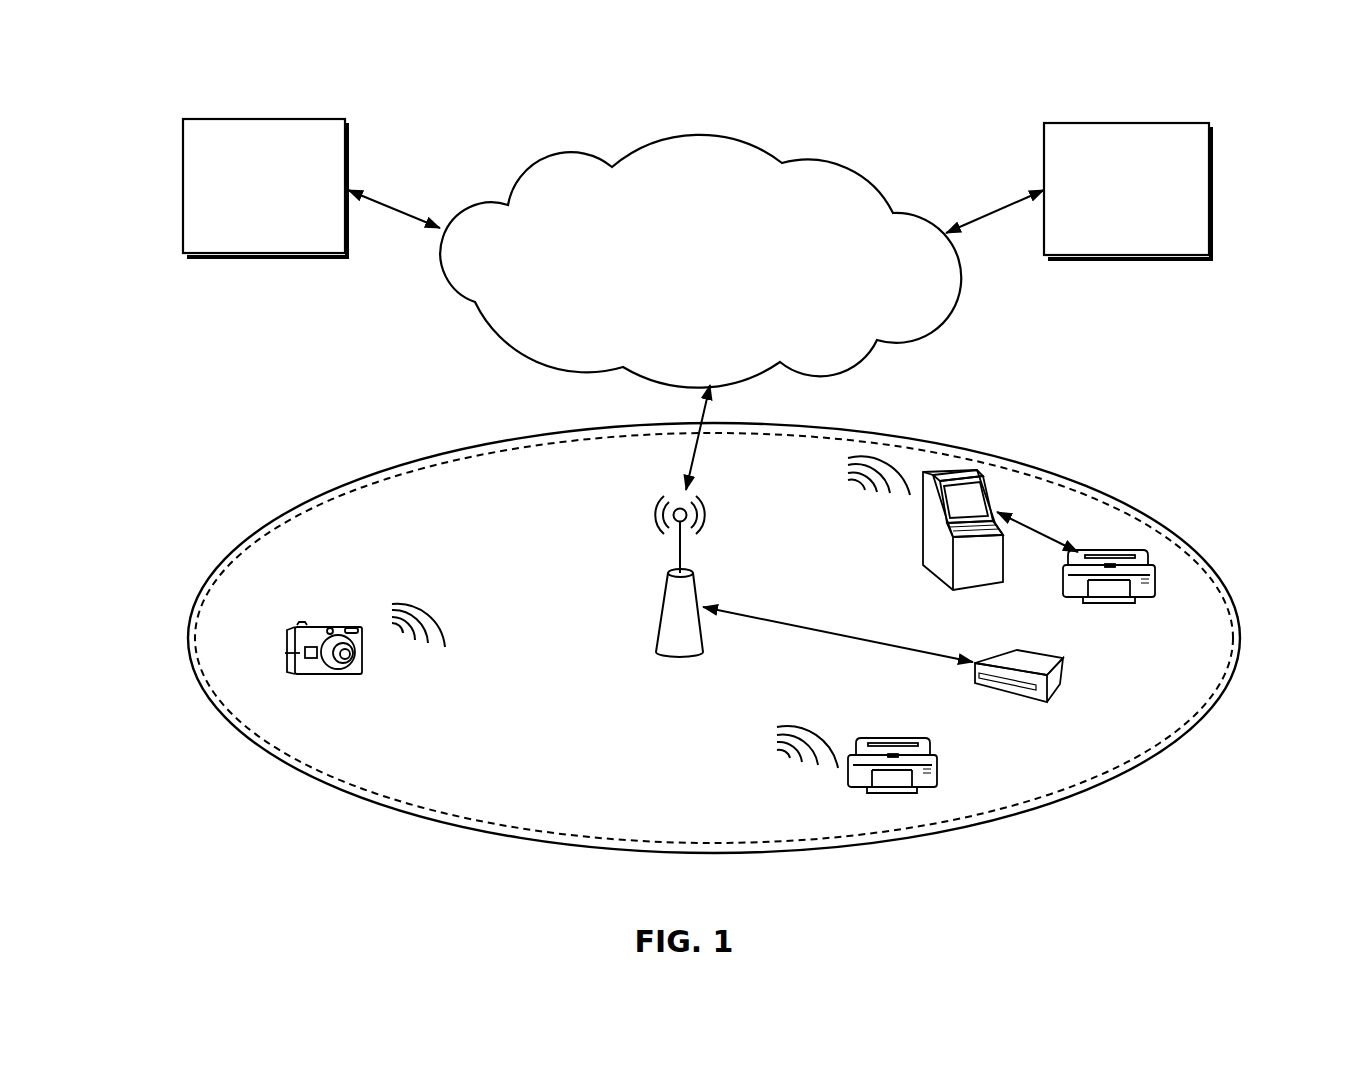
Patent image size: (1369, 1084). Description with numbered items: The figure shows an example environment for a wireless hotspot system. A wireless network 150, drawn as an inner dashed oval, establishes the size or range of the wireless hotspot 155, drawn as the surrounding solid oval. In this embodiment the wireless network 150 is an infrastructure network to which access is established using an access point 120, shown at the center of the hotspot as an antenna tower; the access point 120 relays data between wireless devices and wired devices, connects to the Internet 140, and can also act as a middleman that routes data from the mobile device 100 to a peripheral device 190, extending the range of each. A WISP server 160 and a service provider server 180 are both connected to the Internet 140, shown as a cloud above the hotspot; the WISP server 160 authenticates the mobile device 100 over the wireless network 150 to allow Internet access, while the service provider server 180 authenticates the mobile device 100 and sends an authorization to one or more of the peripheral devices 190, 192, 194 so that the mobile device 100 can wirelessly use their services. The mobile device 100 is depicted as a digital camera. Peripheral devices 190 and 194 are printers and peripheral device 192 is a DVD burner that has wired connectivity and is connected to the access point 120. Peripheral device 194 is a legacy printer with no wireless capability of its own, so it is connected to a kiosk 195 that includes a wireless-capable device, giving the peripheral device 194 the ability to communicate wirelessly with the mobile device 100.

The mobile device 100 is at (285, 640).
The access point 120 is at (663, 635).
The Internet 140 is at (684, 298).
The wireless network 150 is at (265, 532).
The wireless hotspot 155 is at (395, 464).
The WISP server 160 is at (1167, 122).
The service provider server 180 is at (240, 118).
The peripheral device 190 is at (937, 765).
The peripheral device 192 is at (1063, 672).
The peripheral device 194 is at (1148, 562).
The kiosk 195 is at (937, 553).